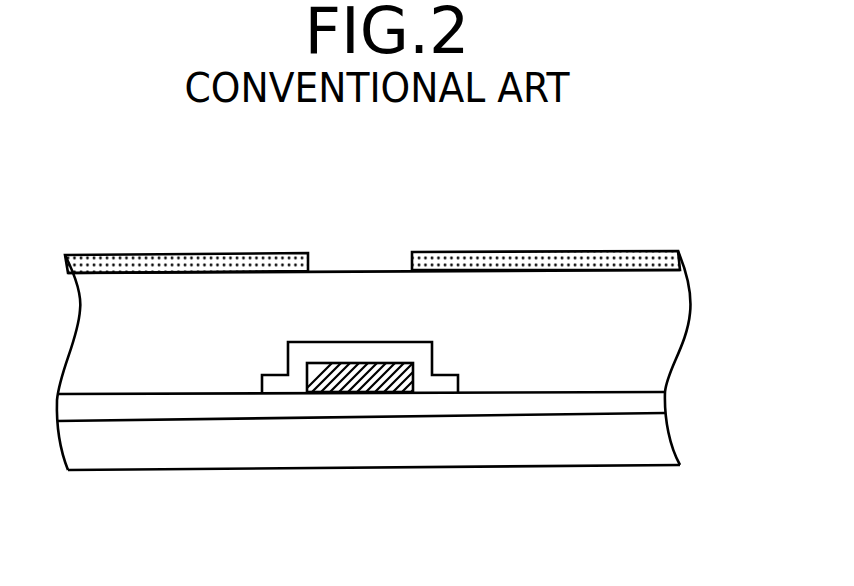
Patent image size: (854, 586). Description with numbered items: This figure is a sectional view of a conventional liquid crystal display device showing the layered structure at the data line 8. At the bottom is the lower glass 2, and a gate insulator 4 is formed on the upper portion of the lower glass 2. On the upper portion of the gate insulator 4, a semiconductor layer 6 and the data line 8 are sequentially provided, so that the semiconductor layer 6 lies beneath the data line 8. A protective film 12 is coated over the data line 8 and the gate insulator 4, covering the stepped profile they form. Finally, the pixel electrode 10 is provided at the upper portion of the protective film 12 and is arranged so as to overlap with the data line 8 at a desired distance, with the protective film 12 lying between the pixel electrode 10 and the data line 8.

The lower glass 2 is at (667, 438).
The gate insulator 4 is at (665, 393).
The semiconductor layer 6 is at (383, 378).
The data line 8 is at (285, 381).
The pixel electrode 10 is at (641, 251).
The protective film 12 is at (690, 313).